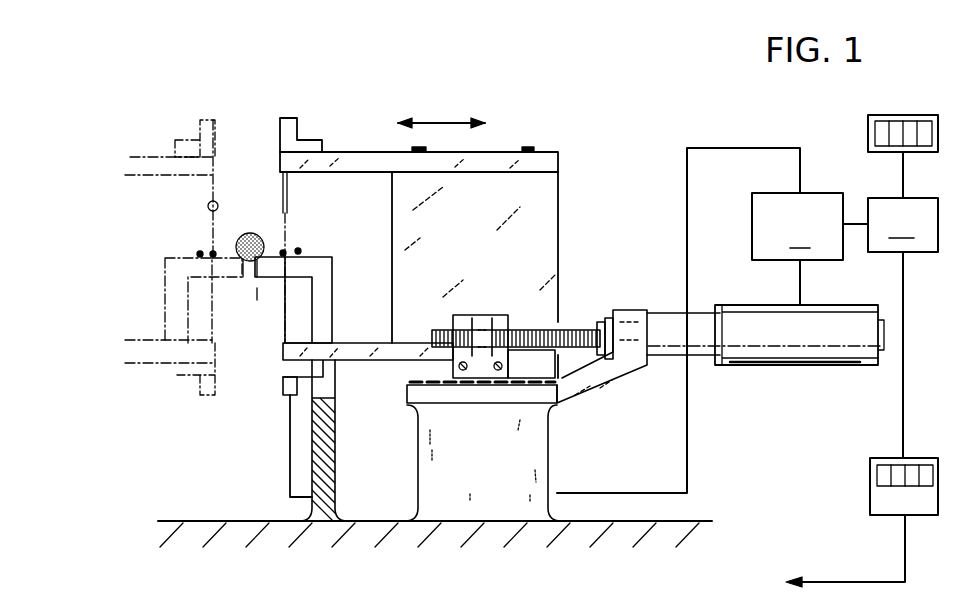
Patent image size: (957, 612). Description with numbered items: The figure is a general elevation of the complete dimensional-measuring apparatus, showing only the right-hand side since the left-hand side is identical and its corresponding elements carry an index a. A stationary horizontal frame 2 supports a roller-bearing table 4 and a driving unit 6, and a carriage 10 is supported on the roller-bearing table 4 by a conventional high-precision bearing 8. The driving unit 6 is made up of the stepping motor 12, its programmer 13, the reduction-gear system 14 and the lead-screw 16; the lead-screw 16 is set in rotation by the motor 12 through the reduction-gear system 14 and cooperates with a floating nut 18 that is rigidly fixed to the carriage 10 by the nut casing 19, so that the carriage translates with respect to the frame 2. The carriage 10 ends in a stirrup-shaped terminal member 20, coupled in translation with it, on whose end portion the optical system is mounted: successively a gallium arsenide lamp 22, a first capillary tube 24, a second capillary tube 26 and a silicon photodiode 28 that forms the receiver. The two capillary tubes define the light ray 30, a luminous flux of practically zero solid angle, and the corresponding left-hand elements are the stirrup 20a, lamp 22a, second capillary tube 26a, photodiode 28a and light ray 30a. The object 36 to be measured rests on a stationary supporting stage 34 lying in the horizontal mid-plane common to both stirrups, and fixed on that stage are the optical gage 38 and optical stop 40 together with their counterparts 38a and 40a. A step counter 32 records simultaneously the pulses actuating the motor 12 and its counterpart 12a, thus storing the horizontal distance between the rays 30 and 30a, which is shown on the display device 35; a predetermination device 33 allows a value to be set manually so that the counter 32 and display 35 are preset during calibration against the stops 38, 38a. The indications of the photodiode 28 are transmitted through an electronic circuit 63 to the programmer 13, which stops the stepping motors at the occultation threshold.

The stationary horizontal frame 2 is at (490, 486).
The roller-bearing table 4 is at (520, 390).
The driving unit 6 is at (798, 372).
The high-precision bearing 8 is at (415, 378).
The carriage 10 is at (562, 242).
The motor 12 is at (843, 337).
The counterpart motor 12a is at (826, 561).
The programmer 13 is at (810, 249).
The reduction-gear system 14 is at (690, 328).
The lead-screw 16 is at (578, 330).
The floating nut 18 is at (470, 347).
The nut casing 19 is at (503, 303).
The stirrup-shaped terminal member 20 is at (355, 158).
The counterpart stirrup 20a is at (147, 157).
The lamp 22 is at (292, 118).
The counterpart lamp 22a is at (200, 127).
The first capillary tube 24 is at (283, 198).
The second capillary tube 26 is at (285, 332).
The counterpart second capillary tube 26a is at (211, 332).
The photodiode 28 is at (285, 393).
The counterpart photodiode 28a is at (205, 385).
The light ray 30 is at (289, 232).
The counterpart light ray 30a is at (208, 206).
The step counter 32 is at (903, 305).
The predetermination device 33 is at (870, 123).
The stationary supporting stage 34 is at (258, 288).
The display device 35 is at (870, 488).
The object 36 is at (237, 242).
The optical gage 38 is at (298, 254).
The counterpart optical gage 38a is at (200, 255).
The optical stop 40 is at (284, 250).
The counterpart optical stop 40a is at (213, 256).
The electronic circuit 63 is at (687, 478).